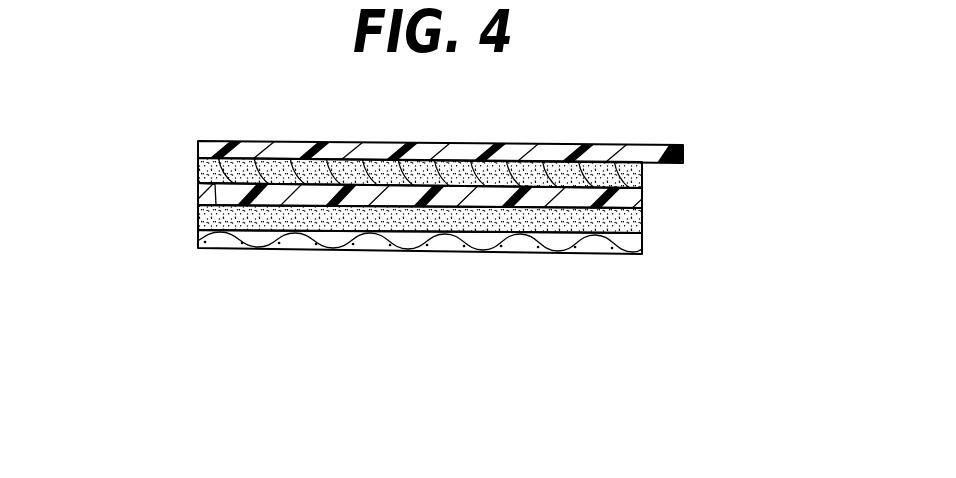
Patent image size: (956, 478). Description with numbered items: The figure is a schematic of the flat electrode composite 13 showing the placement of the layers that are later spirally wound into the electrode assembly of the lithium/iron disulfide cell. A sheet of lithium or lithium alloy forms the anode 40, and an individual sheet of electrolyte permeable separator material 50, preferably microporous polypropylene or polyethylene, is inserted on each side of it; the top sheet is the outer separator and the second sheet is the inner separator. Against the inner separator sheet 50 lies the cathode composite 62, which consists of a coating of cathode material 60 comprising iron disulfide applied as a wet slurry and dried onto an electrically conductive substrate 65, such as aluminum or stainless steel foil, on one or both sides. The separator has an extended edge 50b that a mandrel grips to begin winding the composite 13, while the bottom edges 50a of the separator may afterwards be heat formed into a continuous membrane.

The flat electrode composite 13 is at (224, 112).
The lithium anode 40 is at (647, 180).
The separator sheet 50 is at (617, 152).
The bottom edge of separator 50a is at (198, 193).
The extended separator edge 50b is at (687, 152).
The cathode material 60 is at (640, 222).
The cathode composite 62 is at (193, 205).
The substrate 65 is at (573, 245).